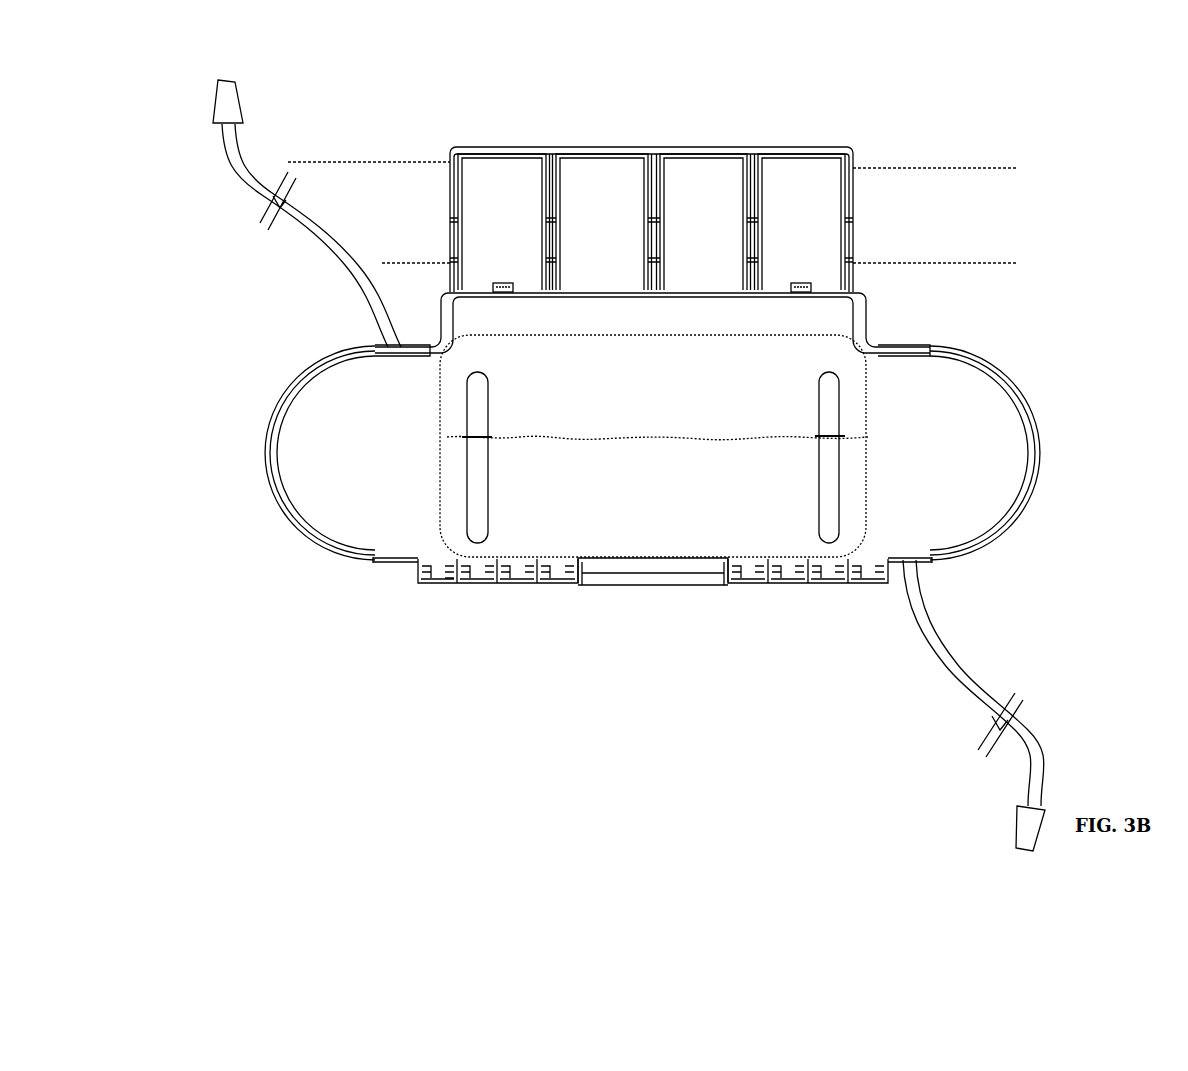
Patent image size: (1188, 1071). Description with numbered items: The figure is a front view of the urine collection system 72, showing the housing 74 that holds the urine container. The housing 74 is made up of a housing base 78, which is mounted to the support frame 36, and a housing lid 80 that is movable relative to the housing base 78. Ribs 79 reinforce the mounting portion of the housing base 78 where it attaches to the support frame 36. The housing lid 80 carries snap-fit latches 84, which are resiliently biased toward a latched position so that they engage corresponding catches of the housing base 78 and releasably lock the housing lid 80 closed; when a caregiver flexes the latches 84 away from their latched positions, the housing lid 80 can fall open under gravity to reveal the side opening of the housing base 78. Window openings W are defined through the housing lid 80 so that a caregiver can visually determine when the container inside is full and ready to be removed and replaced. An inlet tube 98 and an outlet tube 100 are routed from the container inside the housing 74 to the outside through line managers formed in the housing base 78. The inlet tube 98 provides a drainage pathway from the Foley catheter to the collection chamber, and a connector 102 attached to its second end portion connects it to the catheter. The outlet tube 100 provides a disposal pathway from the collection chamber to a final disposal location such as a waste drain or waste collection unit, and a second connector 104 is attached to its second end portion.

The urine collection system 72 is at (1098, 148).
The support frame 36 is at (345, 162).
The housing 74 is at (322, 620).
The housing base 78 is at (880, 190).
The ribs 79 is at (754, 177).
The housing lid 80 is at (1036, 372).
The snap-fit latches 84 is at (503, 283).
The window openings W is at (490, 410).
The inlet tube 98 is at (327, 232).
The outlet tube 100 is at (940, 655).
The connector 102 is at (240, 100).
The second connector 104 is at (1018, 825).